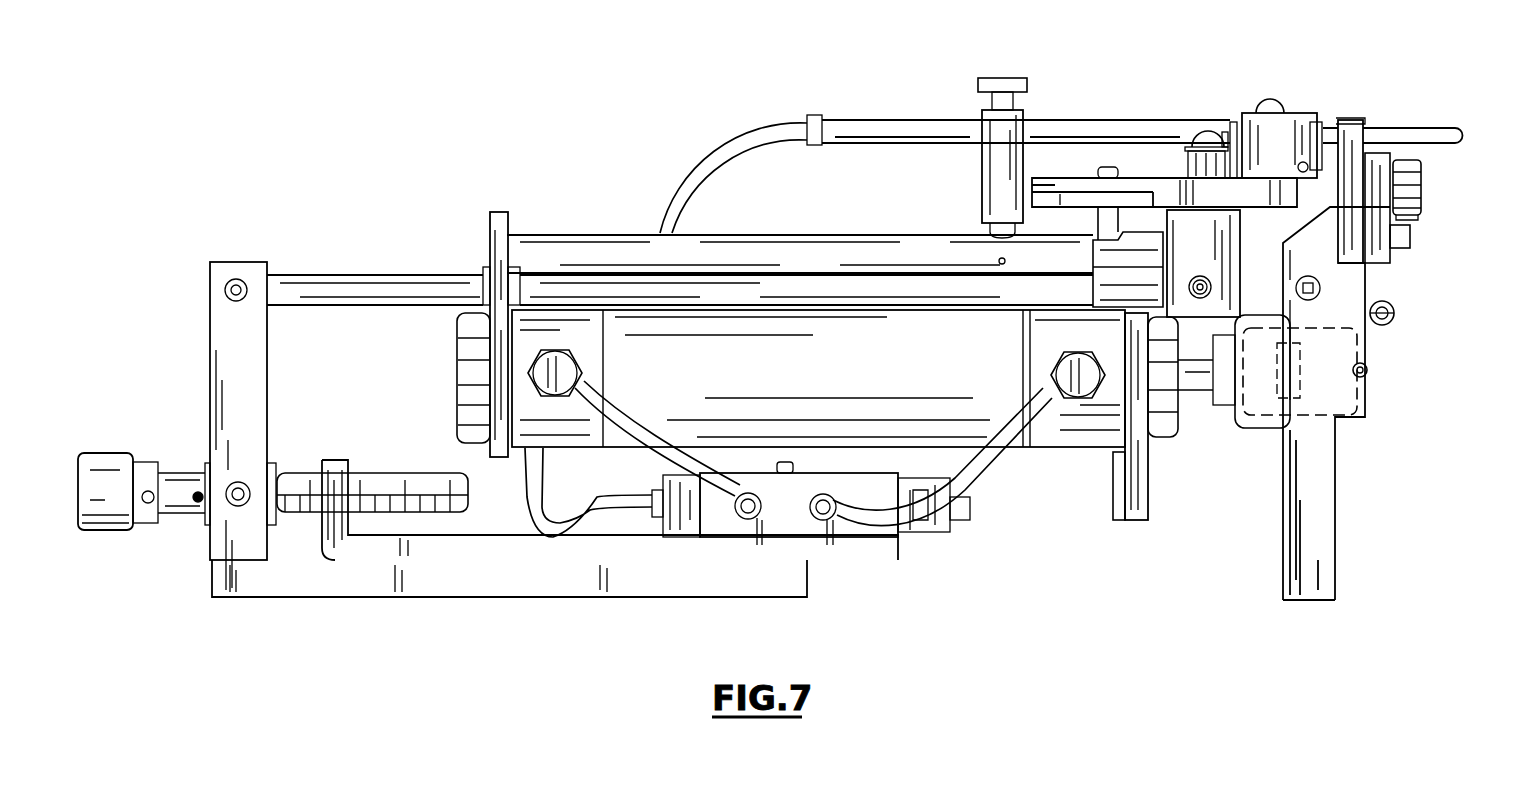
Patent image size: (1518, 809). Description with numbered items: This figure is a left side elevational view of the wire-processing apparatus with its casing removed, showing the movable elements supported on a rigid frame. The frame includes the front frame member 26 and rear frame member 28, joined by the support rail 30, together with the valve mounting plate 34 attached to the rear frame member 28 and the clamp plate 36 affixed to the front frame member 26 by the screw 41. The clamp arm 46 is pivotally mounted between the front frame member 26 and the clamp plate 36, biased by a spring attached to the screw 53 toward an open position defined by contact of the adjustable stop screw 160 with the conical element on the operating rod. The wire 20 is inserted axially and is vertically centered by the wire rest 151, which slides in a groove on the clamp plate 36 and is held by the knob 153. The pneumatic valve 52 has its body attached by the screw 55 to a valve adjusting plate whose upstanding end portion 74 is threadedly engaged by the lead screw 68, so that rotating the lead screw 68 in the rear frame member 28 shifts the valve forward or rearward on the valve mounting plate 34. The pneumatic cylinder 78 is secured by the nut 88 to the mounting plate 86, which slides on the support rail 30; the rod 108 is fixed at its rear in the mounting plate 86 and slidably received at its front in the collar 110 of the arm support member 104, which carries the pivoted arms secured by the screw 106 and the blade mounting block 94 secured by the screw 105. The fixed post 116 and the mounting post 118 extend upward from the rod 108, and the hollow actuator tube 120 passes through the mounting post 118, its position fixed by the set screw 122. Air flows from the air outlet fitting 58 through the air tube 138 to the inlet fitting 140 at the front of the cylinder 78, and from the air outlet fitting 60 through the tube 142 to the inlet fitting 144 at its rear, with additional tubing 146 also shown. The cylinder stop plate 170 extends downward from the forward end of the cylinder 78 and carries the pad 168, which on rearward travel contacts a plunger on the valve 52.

The wire 20 is at (1435, 128).
The front frame member 26 is at (1322, 470).
The rear frame member 28 is at (257, 385).
The support rail 30 is at (395, 282).
The valve mounting plate 34 is at (495, 590).
The clamp plate 36 is at (1388, 265).
The screw 41 is at (1410, 234).
The clamp arm 46 is at (1348, 120).
The pneumatic valve 52 is at (811, 519).
The screw 53 is at (1395, 313).
The screw 55 is at (783, 464).
The air outlet fitting 58 is at (820, 522).
The air outlet fitting 60 is at (747, 521).
The lead screw 68 is at (393, 475).
The upstanding end portion 74 is at (333, 468).
The pneumatic cylinder 78 is at (842, 380).
The mounting plate 86 is at (500, 214).
The nut 88 is at (465, 360).
The blade mounting block 94 is at (1293, 107).
The arm support member 104 is at (1232, 250).
The screw 105 is at (1272, 99).
The screw 106 is at (1206, 140).
The rod 108 is at (835, 249).
The collar 110 is at (1102, 244).
The fixed post 116 is at (1100, 216).
The mounting post 118 is at (992, 165).
The hollow actuator tube 120 is at (878, 125).
The set screw 122 is at (995, 80).
The air tube 138 is at (988, 462).
The inlet fitting 140 is at (1062, 372).
The tube 142 is at (625, 415).
The inlet fitting 144 is at (575, 370).
The hose 146 is at (738, 157).
The wire rest 151 is at (1375, 150).
The knob 153 is at (1422, 173).
The adjustable stop screw 160 is at (1368, 370).
The pad 168 is at (1118, 500).
The cylinder stop plate 170 is at (1142, 478).